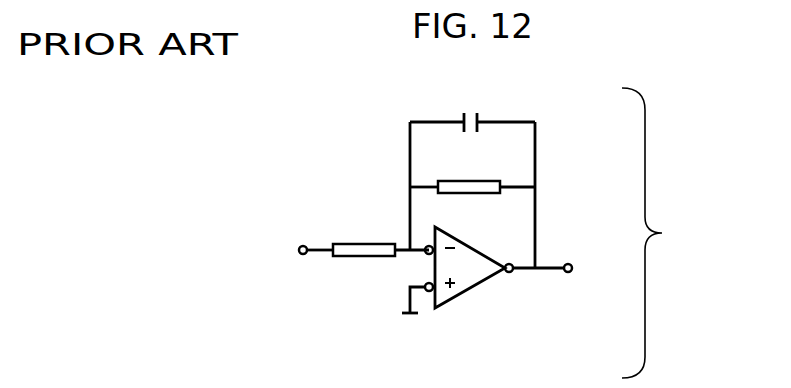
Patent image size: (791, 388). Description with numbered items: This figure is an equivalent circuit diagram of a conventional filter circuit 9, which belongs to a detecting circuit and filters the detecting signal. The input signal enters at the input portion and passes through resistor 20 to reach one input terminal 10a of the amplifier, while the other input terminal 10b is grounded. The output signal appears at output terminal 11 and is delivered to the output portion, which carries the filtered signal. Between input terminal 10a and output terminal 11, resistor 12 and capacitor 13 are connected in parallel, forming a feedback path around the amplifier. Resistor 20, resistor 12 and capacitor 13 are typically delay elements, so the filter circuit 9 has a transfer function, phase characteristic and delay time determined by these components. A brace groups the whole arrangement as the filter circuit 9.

The filter circuit 9 is at (653, 233).
The input terminal 10a is at (426, 254).
The other input terminal 10b is at (428, 292).
The output terminal 11 is at (513, 272).
The resistor 12 is at (447, 183).
The capacitor 13 is at (480, 113).
The resistor 20 is at (340, 243).